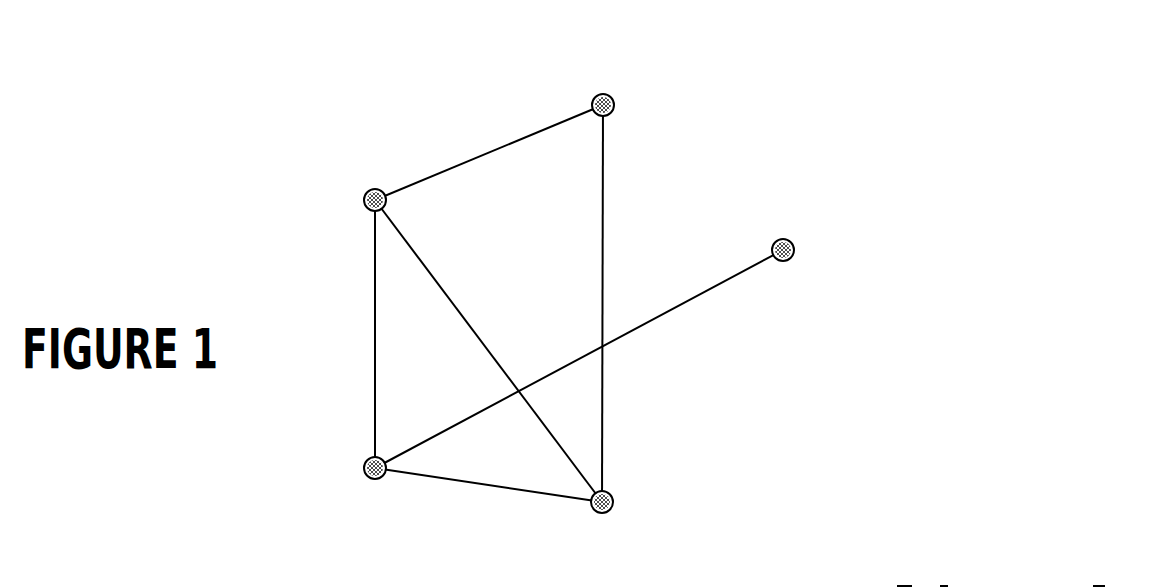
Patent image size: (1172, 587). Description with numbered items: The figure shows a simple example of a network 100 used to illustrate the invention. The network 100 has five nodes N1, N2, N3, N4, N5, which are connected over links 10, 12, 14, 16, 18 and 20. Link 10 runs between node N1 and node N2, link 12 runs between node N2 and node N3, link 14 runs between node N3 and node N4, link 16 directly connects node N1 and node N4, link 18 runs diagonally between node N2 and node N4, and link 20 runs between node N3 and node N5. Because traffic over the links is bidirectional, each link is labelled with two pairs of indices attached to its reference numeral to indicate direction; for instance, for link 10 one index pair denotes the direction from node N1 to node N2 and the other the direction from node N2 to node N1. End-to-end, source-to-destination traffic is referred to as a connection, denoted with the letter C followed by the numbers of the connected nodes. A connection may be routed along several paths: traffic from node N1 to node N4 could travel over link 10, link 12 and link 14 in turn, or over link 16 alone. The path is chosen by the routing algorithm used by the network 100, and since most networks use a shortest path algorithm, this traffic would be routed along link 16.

The network 100 is at (452, 380).
The link 10 is at (525, 137).
The link 12 is at (373, 325).
The link 14 is at (487, 478).
The link 16 is at (607, 262).
The link 18 is at (426, 258).
The link 20 is at (727, 285).
The node N1 is at (603, 81).
The node N2 is at (365, 181).
The node N3 is at (349, 462).
The node N4 is at (629, 498).
The node N5 is at (787, 233).